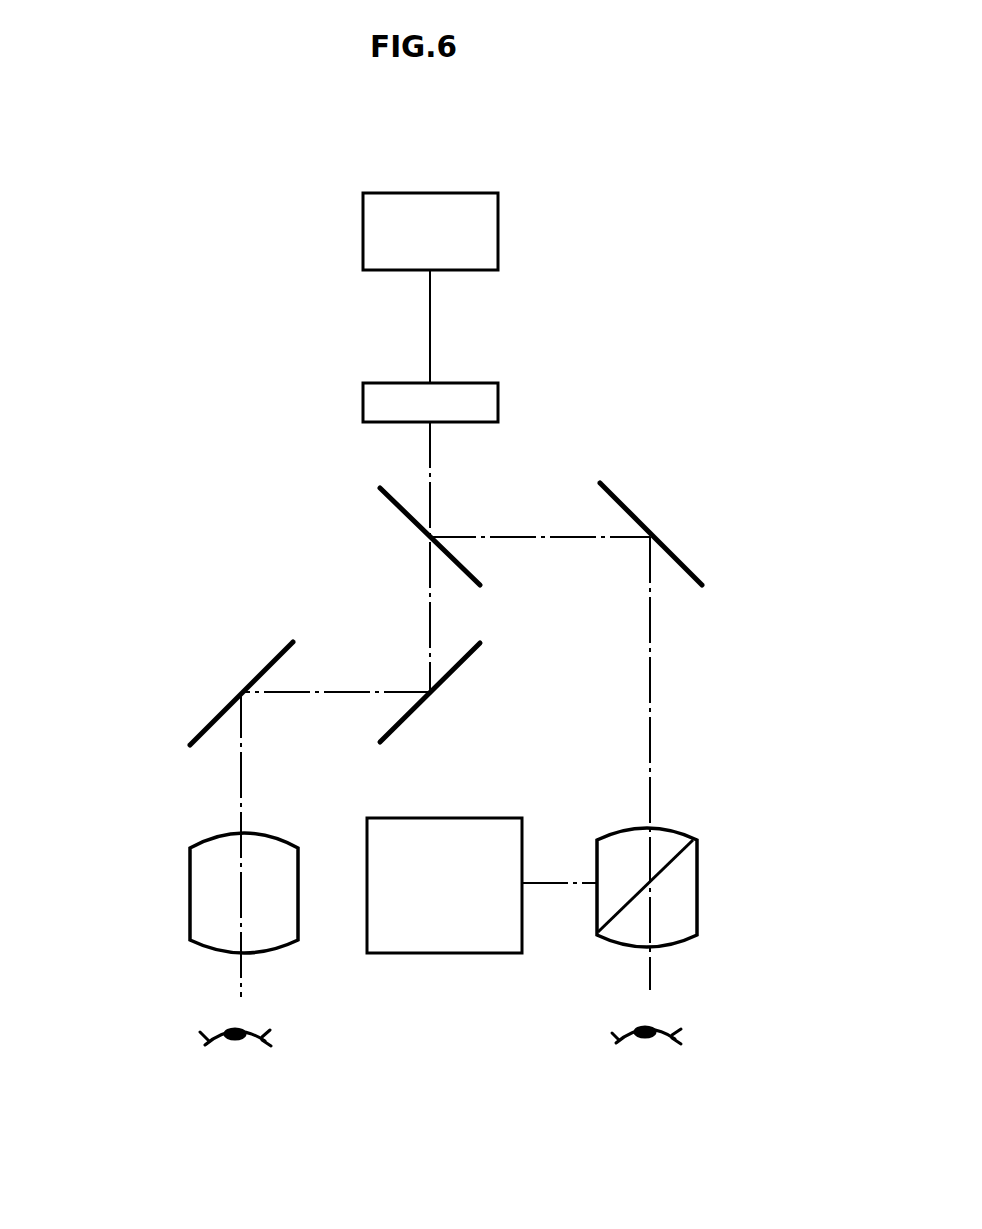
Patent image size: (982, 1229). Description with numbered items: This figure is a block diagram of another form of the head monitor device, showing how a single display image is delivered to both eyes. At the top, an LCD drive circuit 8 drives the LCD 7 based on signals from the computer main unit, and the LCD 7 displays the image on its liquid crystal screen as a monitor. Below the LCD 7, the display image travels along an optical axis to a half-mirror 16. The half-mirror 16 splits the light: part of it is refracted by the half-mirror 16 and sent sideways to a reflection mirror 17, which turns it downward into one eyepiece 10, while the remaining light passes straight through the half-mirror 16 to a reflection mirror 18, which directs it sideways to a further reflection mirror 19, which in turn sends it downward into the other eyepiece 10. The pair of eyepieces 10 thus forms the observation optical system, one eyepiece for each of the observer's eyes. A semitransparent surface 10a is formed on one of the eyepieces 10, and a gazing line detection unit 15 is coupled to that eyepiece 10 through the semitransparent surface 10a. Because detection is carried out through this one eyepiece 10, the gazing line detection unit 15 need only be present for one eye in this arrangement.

The LCD 7 is at (498, 398).
The LCD drive circuit 8 is at (498, 229).
The eyepiece 10 is at (297, 938).
The semitransparent surface 10a is at (668, 857).
The gazing line detection unit 15 is at (465, 953).
The half-mirror 16 is at (467, 570).
The reflection mirror 17 is at (683, 559).
The reflection mirror 18 is at (472, 657).
The reflection mirror 19 is at (264, 667).